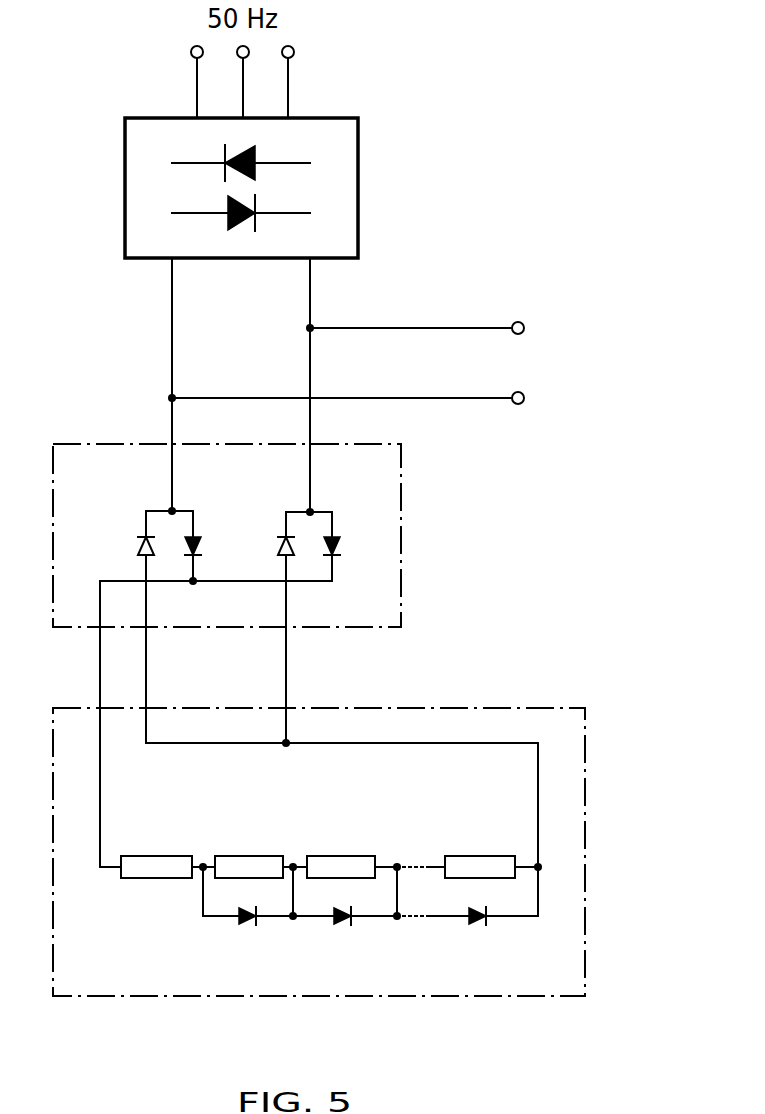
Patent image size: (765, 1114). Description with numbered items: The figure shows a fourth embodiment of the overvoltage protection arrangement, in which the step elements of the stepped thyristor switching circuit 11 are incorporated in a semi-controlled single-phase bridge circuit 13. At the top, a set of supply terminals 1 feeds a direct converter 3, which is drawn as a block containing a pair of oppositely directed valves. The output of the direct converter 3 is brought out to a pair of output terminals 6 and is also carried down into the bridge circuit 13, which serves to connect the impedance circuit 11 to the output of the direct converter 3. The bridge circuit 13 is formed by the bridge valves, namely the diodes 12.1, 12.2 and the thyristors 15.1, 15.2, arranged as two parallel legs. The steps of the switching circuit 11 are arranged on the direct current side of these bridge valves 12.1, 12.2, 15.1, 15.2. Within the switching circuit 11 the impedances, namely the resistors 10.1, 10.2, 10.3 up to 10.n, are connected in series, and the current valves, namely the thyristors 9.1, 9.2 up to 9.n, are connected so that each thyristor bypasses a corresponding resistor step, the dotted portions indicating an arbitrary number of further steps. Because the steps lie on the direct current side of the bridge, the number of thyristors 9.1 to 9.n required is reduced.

The three-phase mains supply terminals 1 is at (192, 50).
The direct converter 3 is at (360, 128).
The DC output terminals 6 is at (524, 334).
The semi-controlled single-phase bridge circuit 13 is at (402, 465).
The diode 12.1 is at (138, 547).
The diode 12.2 is at (279, 547).
The thyristor 15.1 is at (197, 540).
The thyristor 15.2 is at (338, 542).
The stepped current valve-resistor switching circuit 11 is at (586, 772).
The resistor 10.1 is at (152, 857).
The resistor 10.2 is at (250, 857).
The resistor 10.3 is at (344, 857).
The resistor 10.n is at (482, 857).
The thyristor 9.1 is at (247, 921).
The thyristor 9.2 is at (343, 921).
The thyristor 9.n is at (480, 921).